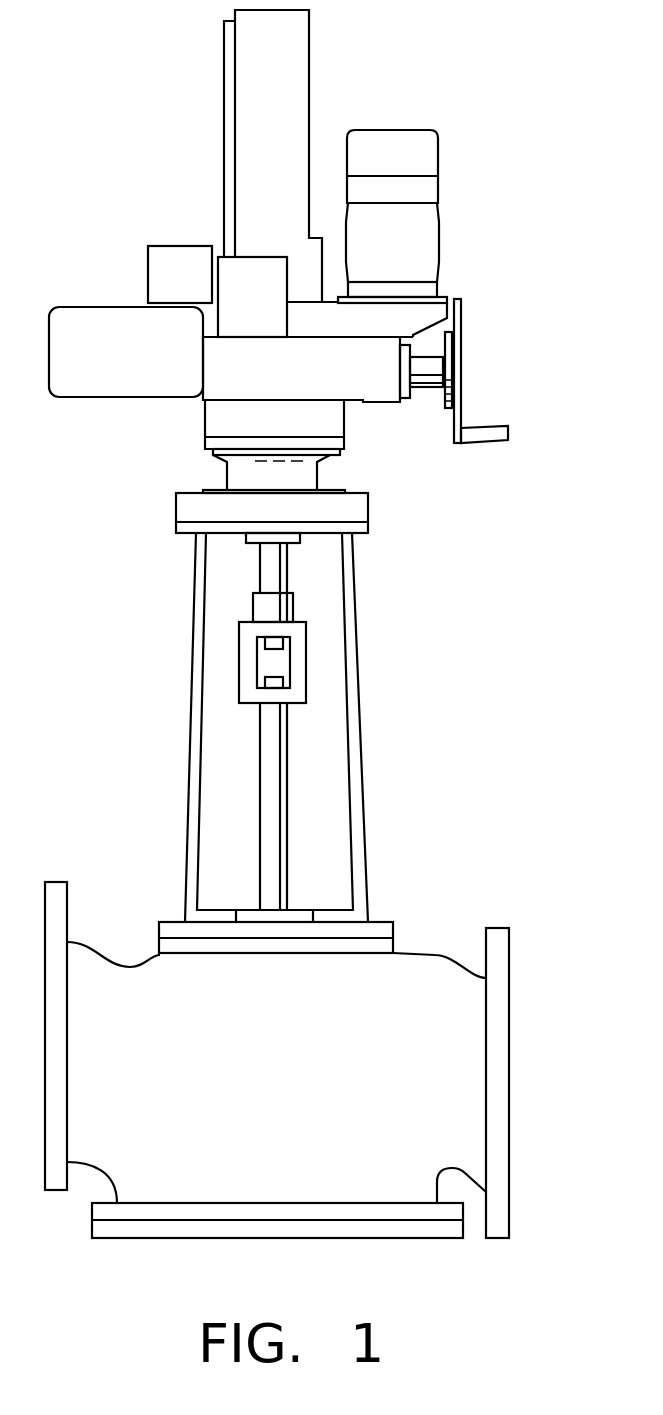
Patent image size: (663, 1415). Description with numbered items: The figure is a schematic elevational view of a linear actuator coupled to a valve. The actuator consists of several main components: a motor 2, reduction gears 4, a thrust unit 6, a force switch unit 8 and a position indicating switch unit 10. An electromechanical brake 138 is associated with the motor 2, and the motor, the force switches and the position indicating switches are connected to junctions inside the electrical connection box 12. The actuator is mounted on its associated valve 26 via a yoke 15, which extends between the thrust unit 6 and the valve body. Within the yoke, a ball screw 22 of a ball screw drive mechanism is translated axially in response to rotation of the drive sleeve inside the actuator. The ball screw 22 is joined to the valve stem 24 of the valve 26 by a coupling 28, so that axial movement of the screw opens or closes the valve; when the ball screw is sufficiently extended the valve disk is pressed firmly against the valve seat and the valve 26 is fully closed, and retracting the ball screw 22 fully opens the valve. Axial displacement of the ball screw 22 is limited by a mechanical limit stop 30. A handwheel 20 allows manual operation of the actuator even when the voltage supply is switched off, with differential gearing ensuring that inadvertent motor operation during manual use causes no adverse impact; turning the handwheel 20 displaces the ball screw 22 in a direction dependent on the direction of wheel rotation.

The motor 2 is at (438, 233).
The electromechanical brake 138 is at (397, 130).
The reduction gears 4 is at (405, 314).
The thrust unit 6 is at (347, 423).
The force switch unit 8 is at (176, 242).
The position indicating switch unit 10 is at (121, 405).
The electrical connection box 12 is at (255, 322).
The yoke 15 is at (362, 845).
The handwheel 20 is at (462, 348).
The ball screw 22 is at (275, 568).
The valve stem 24 is at (278, 778).
The valve 26 is at (432, 946).
The coupling 28 is at (298, 665).
The mechanical limit stop 30 is at (273, 607).